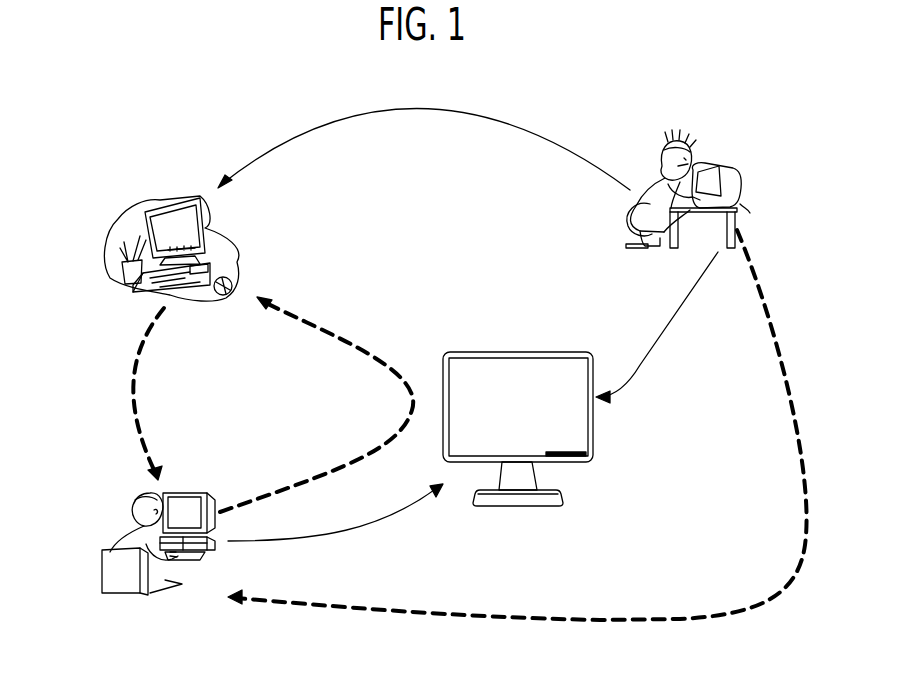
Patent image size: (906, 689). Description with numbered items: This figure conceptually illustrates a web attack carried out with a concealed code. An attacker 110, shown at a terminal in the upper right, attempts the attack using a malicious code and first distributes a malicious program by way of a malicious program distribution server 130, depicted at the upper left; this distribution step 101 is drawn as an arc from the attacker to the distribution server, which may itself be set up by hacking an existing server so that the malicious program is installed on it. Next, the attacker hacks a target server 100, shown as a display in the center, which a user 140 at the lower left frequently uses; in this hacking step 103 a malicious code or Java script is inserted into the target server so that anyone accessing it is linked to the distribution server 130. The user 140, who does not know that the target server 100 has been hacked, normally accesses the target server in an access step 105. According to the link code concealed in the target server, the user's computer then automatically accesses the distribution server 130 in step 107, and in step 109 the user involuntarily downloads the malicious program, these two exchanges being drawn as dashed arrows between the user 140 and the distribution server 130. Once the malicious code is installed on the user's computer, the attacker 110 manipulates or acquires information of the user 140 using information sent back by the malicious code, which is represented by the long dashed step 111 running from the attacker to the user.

The target server 100 is at (533, 350).
The step of distributing malicious program 101 is at (424, 149).
The step of hacking target server 103 is at (657, 327).
The step of accessing target server 105 is at (335, 525).
The step of automatically accessing distribution server 107 is at (316, 404).
The step of downloading malicious program 109 is at (121, 394).
The attacker 110 is at (723, 143).
The step of manipulating or acquiring user information 111 is at (517, 425).
The malicious program distribution server 130 is at (120, 277).
The user 140 is at (125, 592).